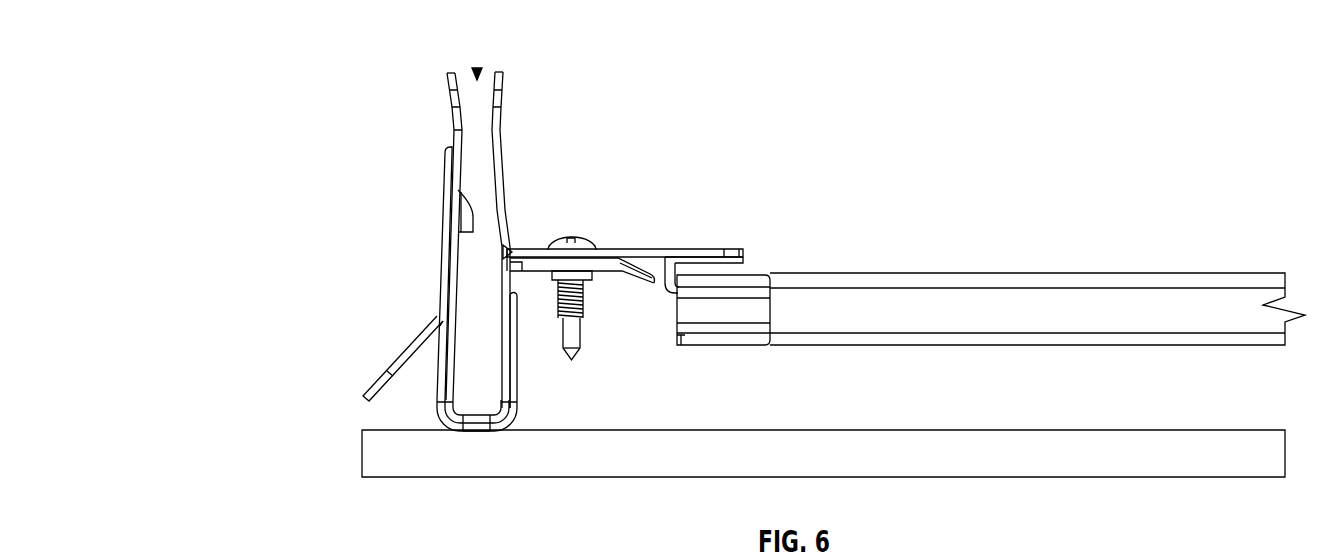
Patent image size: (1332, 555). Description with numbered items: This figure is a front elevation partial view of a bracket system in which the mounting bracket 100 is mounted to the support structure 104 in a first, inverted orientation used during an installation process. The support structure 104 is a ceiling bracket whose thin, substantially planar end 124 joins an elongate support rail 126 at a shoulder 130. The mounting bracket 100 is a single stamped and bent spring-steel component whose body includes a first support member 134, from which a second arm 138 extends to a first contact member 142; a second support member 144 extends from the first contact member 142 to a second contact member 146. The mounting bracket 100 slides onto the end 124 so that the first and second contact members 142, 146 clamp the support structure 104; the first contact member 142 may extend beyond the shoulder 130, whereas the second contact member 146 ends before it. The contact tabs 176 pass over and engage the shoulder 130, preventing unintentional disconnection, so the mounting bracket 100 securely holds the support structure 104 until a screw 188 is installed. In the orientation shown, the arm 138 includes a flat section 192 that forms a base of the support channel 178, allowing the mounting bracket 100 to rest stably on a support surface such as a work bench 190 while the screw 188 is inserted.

The mounting bracket 100 is at (443, 202).
The support structure 104 is at (1130, 310).
The end 124 is at (532, 255).
The elongate support rail 126 is at (1003, 290).
The shoulder 130 is at (653, 277).
The first support member 134 is at (454, 125).
The second arm 138 is at (512, 420).
The first contact member 142 is at (613, 250).
The second support member 144 is at (500, 138).
The second contact member 146 is at (525, 272).
The contact tab 176 is at (690, 262).
The support channel 178 is at (476, 68).
The screw 188 is at (578, 334).
The work bench 190 is at (1130, 462).
The flat section 192 is at (470, 432).